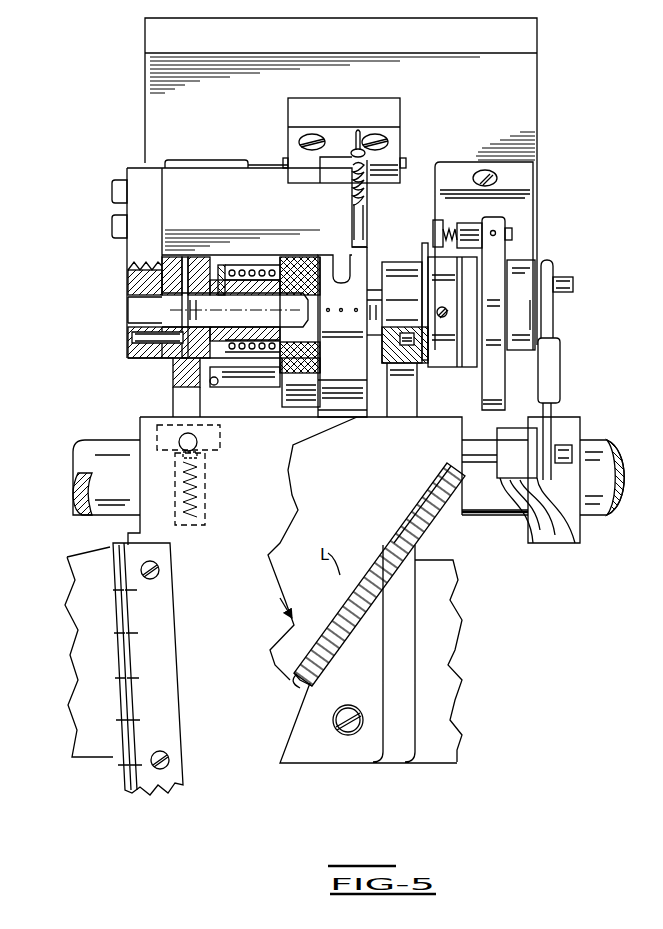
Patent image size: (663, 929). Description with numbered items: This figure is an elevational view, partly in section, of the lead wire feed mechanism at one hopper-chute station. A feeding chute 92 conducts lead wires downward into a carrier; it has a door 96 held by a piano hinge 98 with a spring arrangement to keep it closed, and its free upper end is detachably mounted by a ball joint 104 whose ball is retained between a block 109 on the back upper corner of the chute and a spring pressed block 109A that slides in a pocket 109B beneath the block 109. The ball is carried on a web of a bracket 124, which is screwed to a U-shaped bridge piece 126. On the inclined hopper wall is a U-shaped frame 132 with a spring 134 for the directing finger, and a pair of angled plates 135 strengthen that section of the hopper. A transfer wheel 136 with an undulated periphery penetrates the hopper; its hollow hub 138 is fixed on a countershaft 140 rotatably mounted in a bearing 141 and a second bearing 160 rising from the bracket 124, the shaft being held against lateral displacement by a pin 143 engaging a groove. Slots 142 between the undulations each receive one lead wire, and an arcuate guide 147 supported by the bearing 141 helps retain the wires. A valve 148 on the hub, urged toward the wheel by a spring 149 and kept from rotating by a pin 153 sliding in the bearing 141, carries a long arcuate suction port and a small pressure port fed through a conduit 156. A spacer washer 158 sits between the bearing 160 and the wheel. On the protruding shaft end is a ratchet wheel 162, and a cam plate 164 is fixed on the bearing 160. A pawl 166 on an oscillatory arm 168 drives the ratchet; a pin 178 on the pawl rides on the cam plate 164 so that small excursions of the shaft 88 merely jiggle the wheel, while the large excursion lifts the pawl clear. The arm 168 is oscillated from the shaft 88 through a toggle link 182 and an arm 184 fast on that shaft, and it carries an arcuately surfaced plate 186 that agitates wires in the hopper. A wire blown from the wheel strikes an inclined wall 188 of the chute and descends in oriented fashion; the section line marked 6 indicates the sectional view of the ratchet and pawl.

The section line 6- 6 is at (493, 187).
The shaft 88 is at (597, 443).
The feeding chute 92 is at (428, 537).
The door 96 is at (292, 495).
The piano hinge 98 is at (170, 613).
The ball joint 104 is at (183, 443).
The block 109 is at (222, 436).
The spring pressed block 109A is at (200, 457).
The pocket 109B is at (205, 497).
The bracket 124 is at (326, 753).
The U-shaped bridge piece 126 is at (453, 663).
The U-shaped frame 132 is at (395, 133).
The spring 134 is at (363, 192).
The angled plates 135 is at (204, 164).
The transfer wheel 136 is at (363, 374).
The hollow hub 138 is at (272, 277).
The countershaft 140 is at (165, 306).
The bearing 141 is at (200, 262).
The slots 142 is at (343, 383).
The pin 143 is at (160, 272).
The arcuate guide 147 is at (352, 232).
The valve 148 is at (284, 394).
The spring 149 is at (240, 272).
The pin 153 is at (210, 370).
The conduit 156 is at (225, 383).
The spacer washer 158 is at (372, 300).
The bearing 160 is at (388, 318).
The ratchet wheel 162 is at (467, 364).
The cam plate 164 is at (423, 289).
The pawl 166 is at (478, 228).
The oscillatory arm 168 is at (500, 225).
The pin 178 is at (422, 253).
The toggle link 182 is at (558, 350).
The arm 184 is at (523, 262).
The arcuately surfaced plate 186 is at (493, 408).
The inclined wall 188 is at (327, 657).